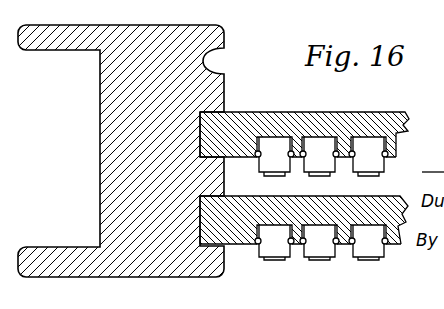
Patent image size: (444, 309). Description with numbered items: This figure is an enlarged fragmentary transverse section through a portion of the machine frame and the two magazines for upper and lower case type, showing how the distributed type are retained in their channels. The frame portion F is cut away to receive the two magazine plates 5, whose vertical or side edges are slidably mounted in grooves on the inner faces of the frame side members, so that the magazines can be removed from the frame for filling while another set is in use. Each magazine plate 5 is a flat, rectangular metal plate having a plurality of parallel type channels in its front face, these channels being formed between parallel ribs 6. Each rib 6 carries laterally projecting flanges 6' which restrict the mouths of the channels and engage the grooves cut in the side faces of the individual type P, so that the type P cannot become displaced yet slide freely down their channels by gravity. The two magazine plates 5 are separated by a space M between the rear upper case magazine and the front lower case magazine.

The frame F is at (222, 154).
The magazine plate 5 is at (233, 120).
The rib 6 is at (305, 165).
The flange 6' is at (338, 197).
The type P is at (318, 150).
The space M is at (236, 176).